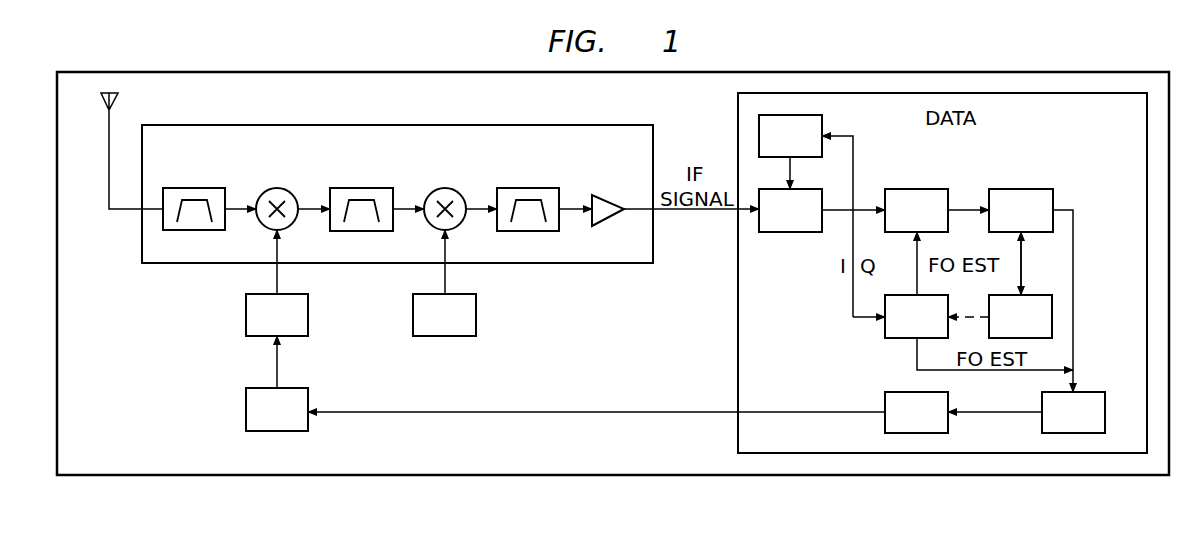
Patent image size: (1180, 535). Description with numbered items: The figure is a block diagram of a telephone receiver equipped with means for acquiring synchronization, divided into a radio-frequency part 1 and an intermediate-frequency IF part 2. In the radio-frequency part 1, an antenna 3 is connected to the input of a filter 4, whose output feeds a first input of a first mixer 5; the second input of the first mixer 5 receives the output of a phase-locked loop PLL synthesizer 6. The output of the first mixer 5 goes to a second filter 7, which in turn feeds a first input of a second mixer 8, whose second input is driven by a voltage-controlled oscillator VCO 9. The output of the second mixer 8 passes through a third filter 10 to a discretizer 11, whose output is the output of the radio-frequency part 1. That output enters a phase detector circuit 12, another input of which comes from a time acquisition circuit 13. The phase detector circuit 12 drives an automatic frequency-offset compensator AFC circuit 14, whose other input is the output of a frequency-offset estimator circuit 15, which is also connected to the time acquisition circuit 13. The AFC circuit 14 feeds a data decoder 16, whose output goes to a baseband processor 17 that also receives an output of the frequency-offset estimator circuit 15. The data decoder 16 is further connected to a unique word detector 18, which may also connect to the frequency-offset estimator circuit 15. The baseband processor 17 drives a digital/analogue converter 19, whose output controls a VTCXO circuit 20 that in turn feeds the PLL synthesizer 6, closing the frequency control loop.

The radio-frequency part 1 is at (525, 263).
The intermediate-frequency IF part 2 is at (738, 318).
The antenna 3 is at (101, 113).
The filter 4 is at (190, 188).
The first mixer 5 is at (283, 188).
The phase-locked loop PLL synthesizer 6 is at (246, 320).
The second filter 7 is at (367, 188).
The second mixer 8 is at (451, 188).
The voltage-controlled oscillator VCO 9 is at (413, 320).
The third filter 10 is at (533, 188).
The discretizer 11 is at (610, 196).
The phase detector circuit 12 is at (791, 232).
The time acquisition circuit 13 is at (822, 123).
The automatic frequency-offset compensator AFC circuit 14 is at (913, 189).
The frequency-offset estimator circuit 15 is at (885, 328).
The data decoder 16 is at (1020, 189).
The baseband processor 17 is at (1088, 392).
The unique word detector 18 is at (1032, 295).
The digital/analogue converter 19 is at (885, 424).
The VTCXO circuit 20 is at (246, 414).